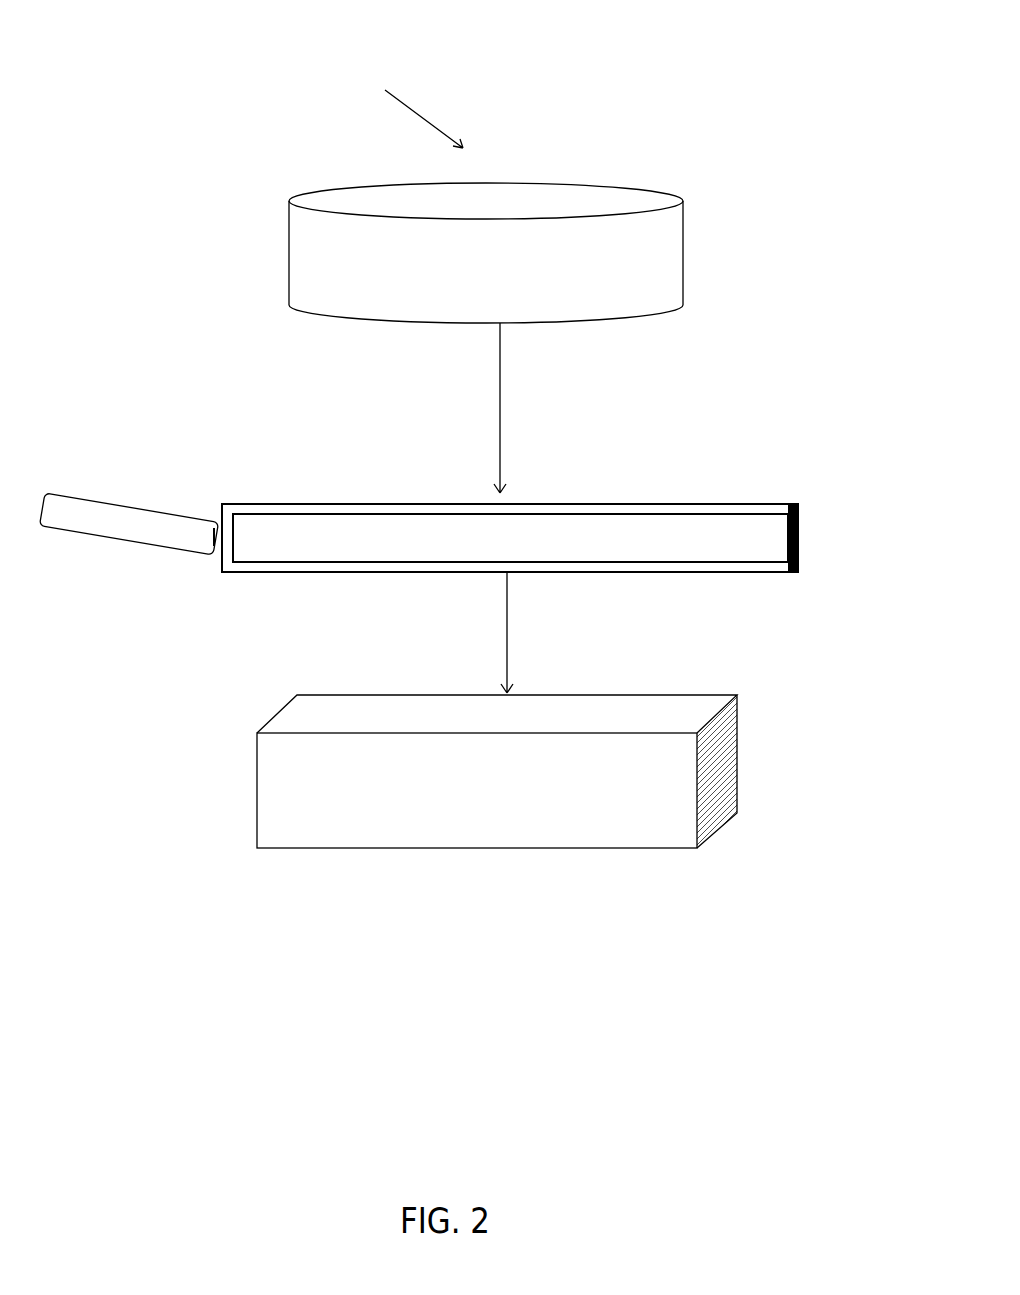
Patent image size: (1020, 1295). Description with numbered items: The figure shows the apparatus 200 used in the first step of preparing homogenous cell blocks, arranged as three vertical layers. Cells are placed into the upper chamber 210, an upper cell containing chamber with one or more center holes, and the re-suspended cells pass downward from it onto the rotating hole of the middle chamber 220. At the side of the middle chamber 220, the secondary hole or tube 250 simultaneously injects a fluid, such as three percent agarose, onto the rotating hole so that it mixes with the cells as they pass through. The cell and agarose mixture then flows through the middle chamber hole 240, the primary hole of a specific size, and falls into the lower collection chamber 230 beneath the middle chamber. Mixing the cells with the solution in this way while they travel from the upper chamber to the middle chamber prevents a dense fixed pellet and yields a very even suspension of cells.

The apparatus 200 is at (610, 88).
The upper chamber 210 is at (632, 262).
The middle chamber 220 is at (636, 548).
The lower collection chamber 230 is at (625, 792).
The middle chamber hole 240 is at (494, 580).
The secondary hole or tube 250 is at (219, 530).